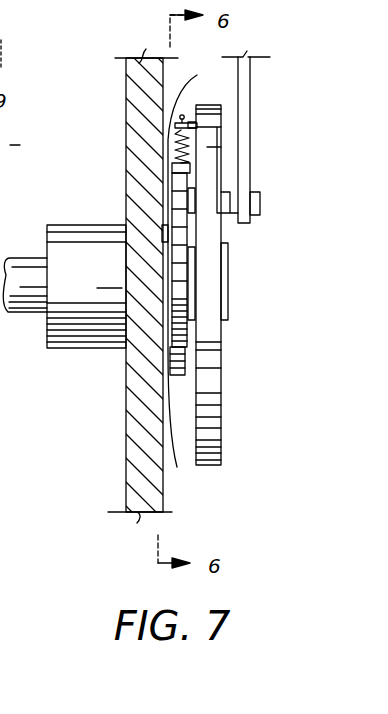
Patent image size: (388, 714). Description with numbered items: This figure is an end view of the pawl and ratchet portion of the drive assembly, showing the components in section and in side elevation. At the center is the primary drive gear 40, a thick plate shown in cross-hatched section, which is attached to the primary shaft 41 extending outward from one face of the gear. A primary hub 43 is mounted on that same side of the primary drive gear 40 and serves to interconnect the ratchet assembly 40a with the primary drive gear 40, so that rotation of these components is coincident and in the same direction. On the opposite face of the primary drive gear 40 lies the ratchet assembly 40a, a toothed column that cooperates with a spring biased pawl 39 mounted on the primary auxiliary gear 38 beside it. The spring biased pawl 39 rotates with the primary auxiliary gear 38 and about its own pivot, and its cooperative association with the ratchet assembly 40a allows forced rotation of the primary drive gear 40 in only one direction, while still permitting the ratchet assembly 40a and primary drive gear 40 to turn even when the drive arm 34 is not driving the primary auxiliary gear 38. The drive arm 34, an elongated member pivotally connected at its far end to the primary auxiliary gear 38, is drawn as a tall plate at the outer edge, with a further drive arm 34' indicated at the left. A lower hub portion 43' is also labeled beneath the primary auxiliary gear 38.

The drive arm 34 is at (268, 137).
The drive arm 34' is at (31, 148).
The primary auxiliary gear 38 is at (218, 392).
The spring biased pawl 39 is at (193, 265).
The primary drive gear 40 is at (126, 88).
The ratchet assembly 40a is at (178, 250).
The primary shaft 41 is at (33, 318).
The primary hub 43 is at (84, 261).
The hub 43' is at (200, 427).